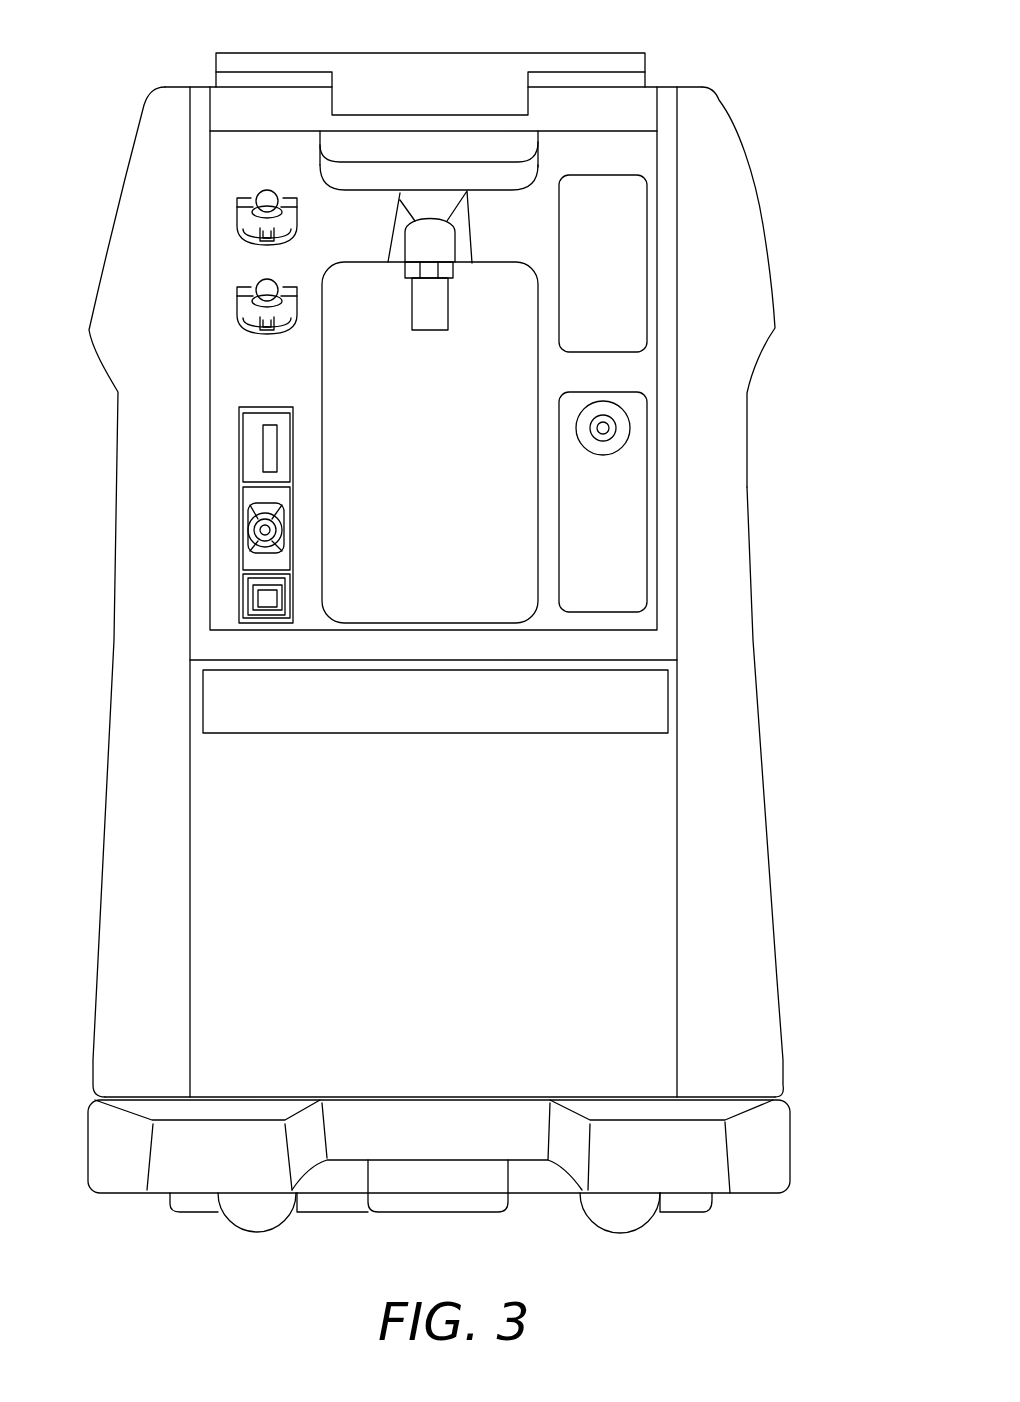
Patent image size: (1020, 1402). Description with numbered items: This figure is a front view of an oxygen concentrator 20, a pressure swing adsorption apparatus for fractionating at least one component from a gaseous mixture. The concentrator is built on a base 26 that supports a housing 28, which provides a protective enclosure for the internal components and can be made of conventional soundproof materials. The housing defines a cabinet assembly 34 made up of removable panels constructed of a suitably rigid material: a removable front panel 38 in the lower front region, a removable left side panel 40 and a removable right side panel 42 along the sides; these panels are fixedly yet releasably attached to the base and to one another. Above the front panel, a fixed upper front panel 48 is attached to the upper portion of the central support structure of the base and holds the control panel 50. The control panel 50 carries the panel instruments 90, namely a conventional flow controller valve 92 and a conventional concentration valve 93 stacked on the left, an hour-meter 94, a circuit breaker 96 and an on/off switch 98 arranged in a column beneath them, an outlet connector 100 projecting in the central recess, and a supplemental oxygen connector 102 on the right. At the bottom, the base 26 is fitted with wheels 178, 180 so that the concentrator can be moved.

The oxygen concentrator 20 is at (138, 62).
The base 26 is at (788, 1168).
The housing 28 is at (452, 53).
The cabinet assembly 34 is at (747, 466).
The removable front panel 38 is at (600, 834).
The removable left side panel 40 is at (98, 977).
The removable right side panel 42 is at (768, 878).
The fixed upper front panel 48 is at (660, 280).
The control panel 50 is at (230, 365).
The panel instruments 90 is at (285, 150).
The flow controller valve 92 is at (232, 212).
The concentration valve 93 is at (233, 293).
The hour-meter 94 is at (238, 443).
The circuit breaker 96 is at (238, 523).
The on/off switch 98 is at (238, 603).
The outlet connector 100 is at (433, 330).
The supplemental oxygen connector 102 is at (618, 447).
The wheel 178 is at (222, 1234).
The wheel 180 is at (663, 1226).